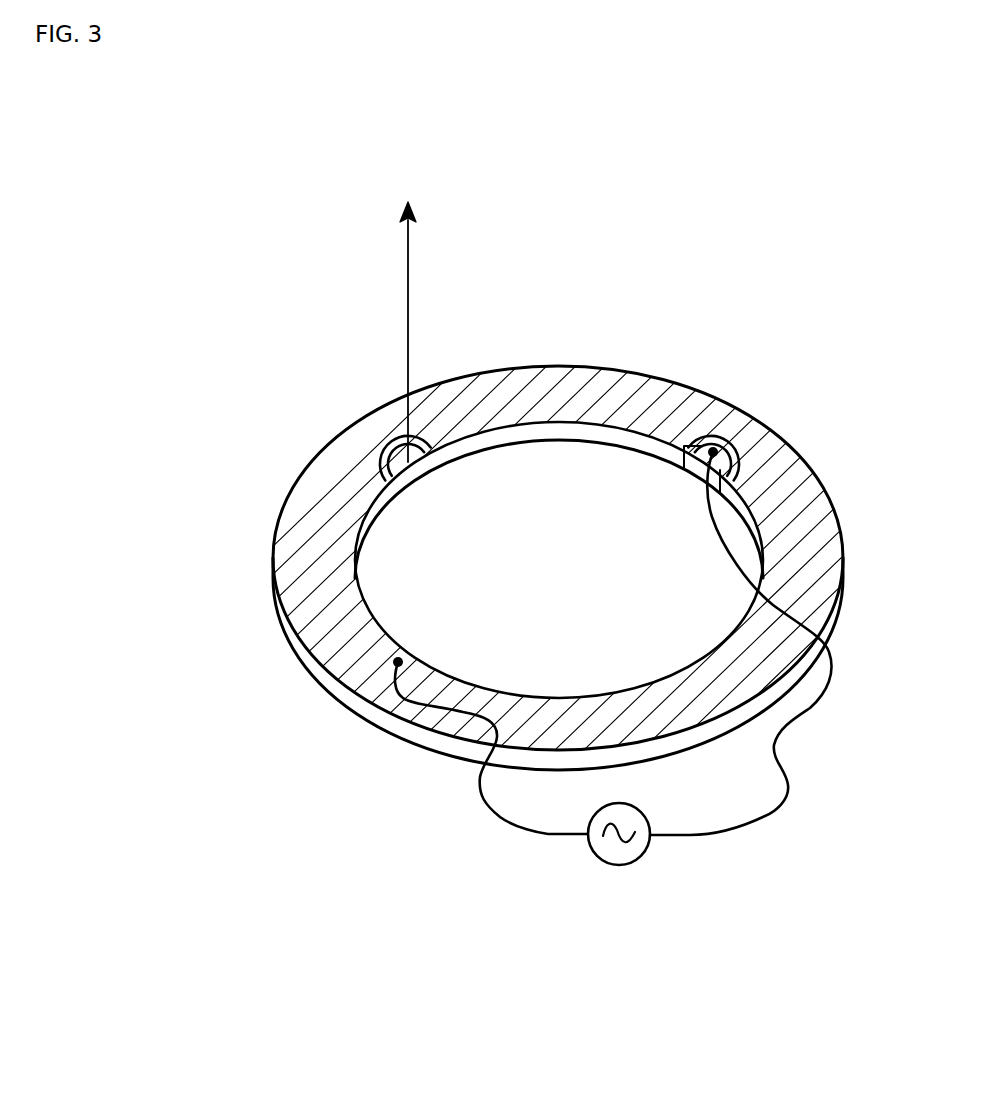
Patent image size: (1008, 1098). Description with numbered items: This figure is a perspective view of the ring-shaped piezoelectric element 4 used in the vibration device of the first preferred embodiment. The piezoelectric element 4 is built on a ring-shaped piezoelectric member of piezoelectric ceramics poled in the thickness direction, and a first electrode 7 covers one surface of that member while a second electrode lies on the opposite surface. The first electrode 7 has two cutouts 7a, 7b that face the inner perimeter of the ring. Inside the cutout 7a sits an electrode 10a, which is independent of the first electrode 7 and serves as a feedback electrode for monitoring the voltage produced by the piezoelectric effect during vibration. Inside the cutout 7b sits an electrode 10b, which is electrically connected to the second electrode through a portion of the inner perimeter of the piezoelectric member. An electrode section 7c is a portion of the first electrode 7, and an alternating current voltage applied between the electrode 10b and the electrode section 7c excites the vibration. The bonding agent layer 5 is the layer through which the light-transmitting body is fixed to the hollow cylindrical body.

The piezoelectric element 4 is at (280, 338).
The bonding agent layer 5 is at (413, 733).
The first electrode 7 is at (787, 503).
The cutout 7a is at (397, 437).
The cutout 7b is at (727, 443).
The electrode section 7c is at (408, 660).
The electrode 10a is at (400, 462).
The electrode 10b is at (700, 450).